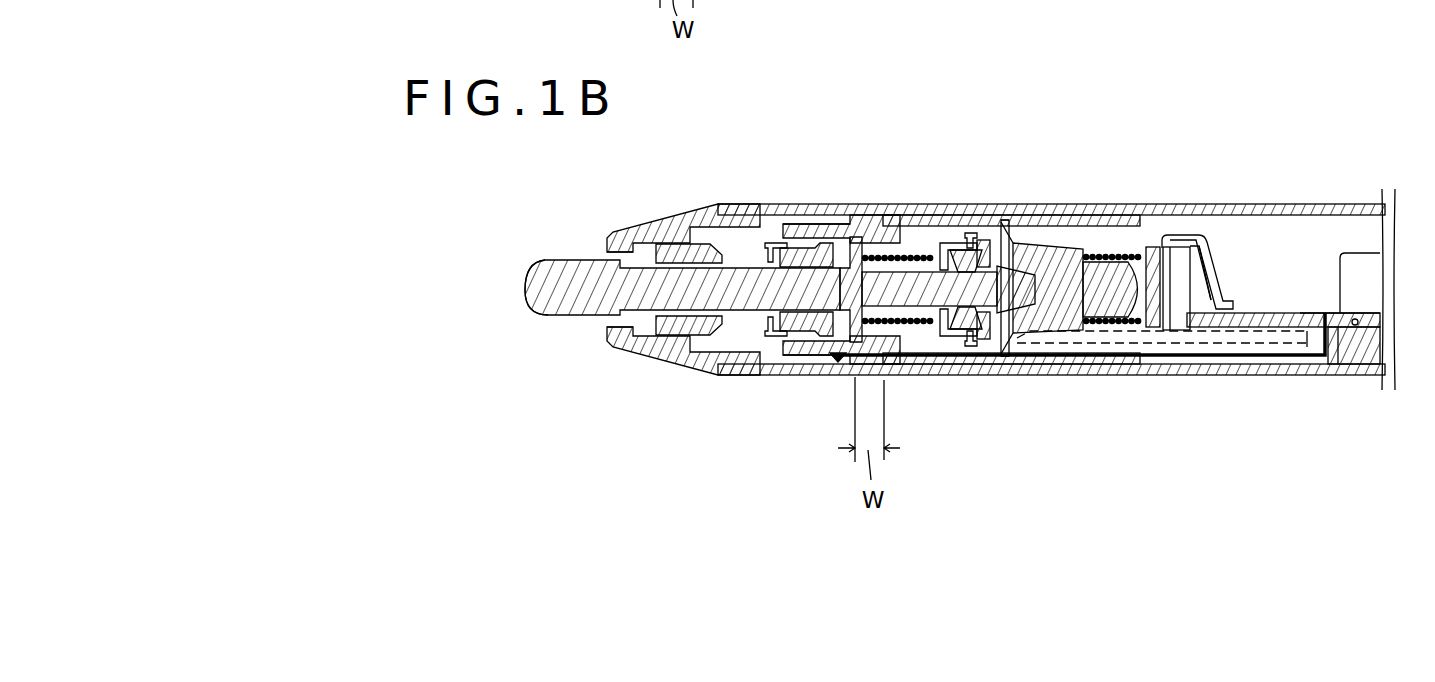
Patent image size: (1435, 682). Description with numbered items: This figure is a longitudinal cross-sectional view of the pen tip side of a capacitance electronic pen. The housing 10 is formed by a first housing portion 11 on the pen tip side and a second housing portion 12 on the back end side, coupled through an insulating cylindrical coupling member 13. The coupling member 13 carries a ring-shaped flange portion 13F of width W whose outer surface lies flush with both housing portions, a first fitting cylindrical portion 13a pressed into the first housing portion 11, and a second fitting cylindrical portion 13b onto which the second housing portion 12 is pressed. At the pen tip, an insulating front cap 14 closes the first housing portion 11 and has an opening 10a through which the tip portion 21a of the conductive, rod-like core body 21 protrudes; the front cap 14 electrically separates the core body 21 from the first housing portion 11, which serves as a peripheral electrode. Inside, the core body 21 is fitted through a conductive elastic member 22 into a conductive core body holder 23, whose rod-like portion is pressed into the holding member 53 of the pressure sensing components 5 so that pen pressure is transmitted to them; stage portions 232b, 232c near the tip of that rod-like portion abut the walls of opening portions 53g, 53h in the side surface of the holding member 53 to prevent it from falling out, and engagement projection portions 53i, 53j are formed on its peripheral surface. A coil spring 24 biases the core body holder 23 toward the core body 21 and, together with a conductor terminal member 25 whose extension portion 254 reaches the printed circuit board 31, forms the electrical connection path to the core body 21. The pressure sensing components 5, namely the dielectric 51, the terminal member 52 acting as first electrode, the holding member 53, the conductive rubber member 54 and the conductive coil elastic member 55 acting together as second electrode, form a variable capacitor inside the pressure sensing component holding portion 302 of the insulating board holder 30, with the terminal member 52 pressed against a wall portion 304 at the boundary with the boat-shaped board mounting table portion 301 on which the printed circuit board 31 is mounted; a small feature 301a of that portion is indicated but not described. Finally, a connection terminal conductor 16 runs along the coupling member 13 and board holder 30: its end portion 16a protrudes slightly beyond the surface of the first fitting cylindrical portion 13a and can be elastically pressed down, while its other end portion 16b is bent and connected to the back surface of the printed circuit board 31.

The pressure sensing components 5 is at (1207, 114).
The housing 10 is at (722, 68).
The opening 10a is at (603, 320).
The first housing portion 11 is at (716, 203).
The second housing portion 12 is at (1041, 243).
The cylindrical coupling member 13 is at (885, 205).
The first fitting cylindrical portion 13a is at (835, 203).
The second fitting cylindrical portion 13b is at (916, 215).
The ring-shaped flange portion 13F is at (860, 237).
The front cap 14 is at (617, 232).
The connection terminal conductor 16 is at (1149, 345).
The end portion 16a is at (840, 380).
The end portion 16b is at (1315, 377).
The core body 21 is at (712, 377).
The tip portion 21a is at (531, 287).
The conductive elastic member 22 is at (747, 380).
The core body holder 23 is at (853, 377).
The coil spring 24 is at (912, 377).
The conductor terminal member 25 is at (935, 377).
The stage portion 232b is at (984, 233).
The stage portion 232c is at (983, 377).
The board holder 30 is at (1337, 377).
The printed circuit board 31 is at (1300, 302).
The dielectric 51 is at (1165, 247).
The terminal member 52 is at (1176, 236).
The holding member 53 is at (1070, 243).
The opening portion 53g is at (1006, 222).
The opening portion 53h is at (1033, 378).
The engagement projection portion 53i is at (1045, 250).
The engagement projection portion 53j is at (1040, 378).
The conductive member 54 is at (1150, 247).
The elastic member 55 is at (1098, 253).
The extension portion 254 is at (1210, 360).
The board mounting table portion 301 is at (1338, 377).
The board hole 301a is at (1356, 328).
The pressure sensing component holding portion 302 is at (1104, 347).
The wall portion 304 is at (1200, 257).